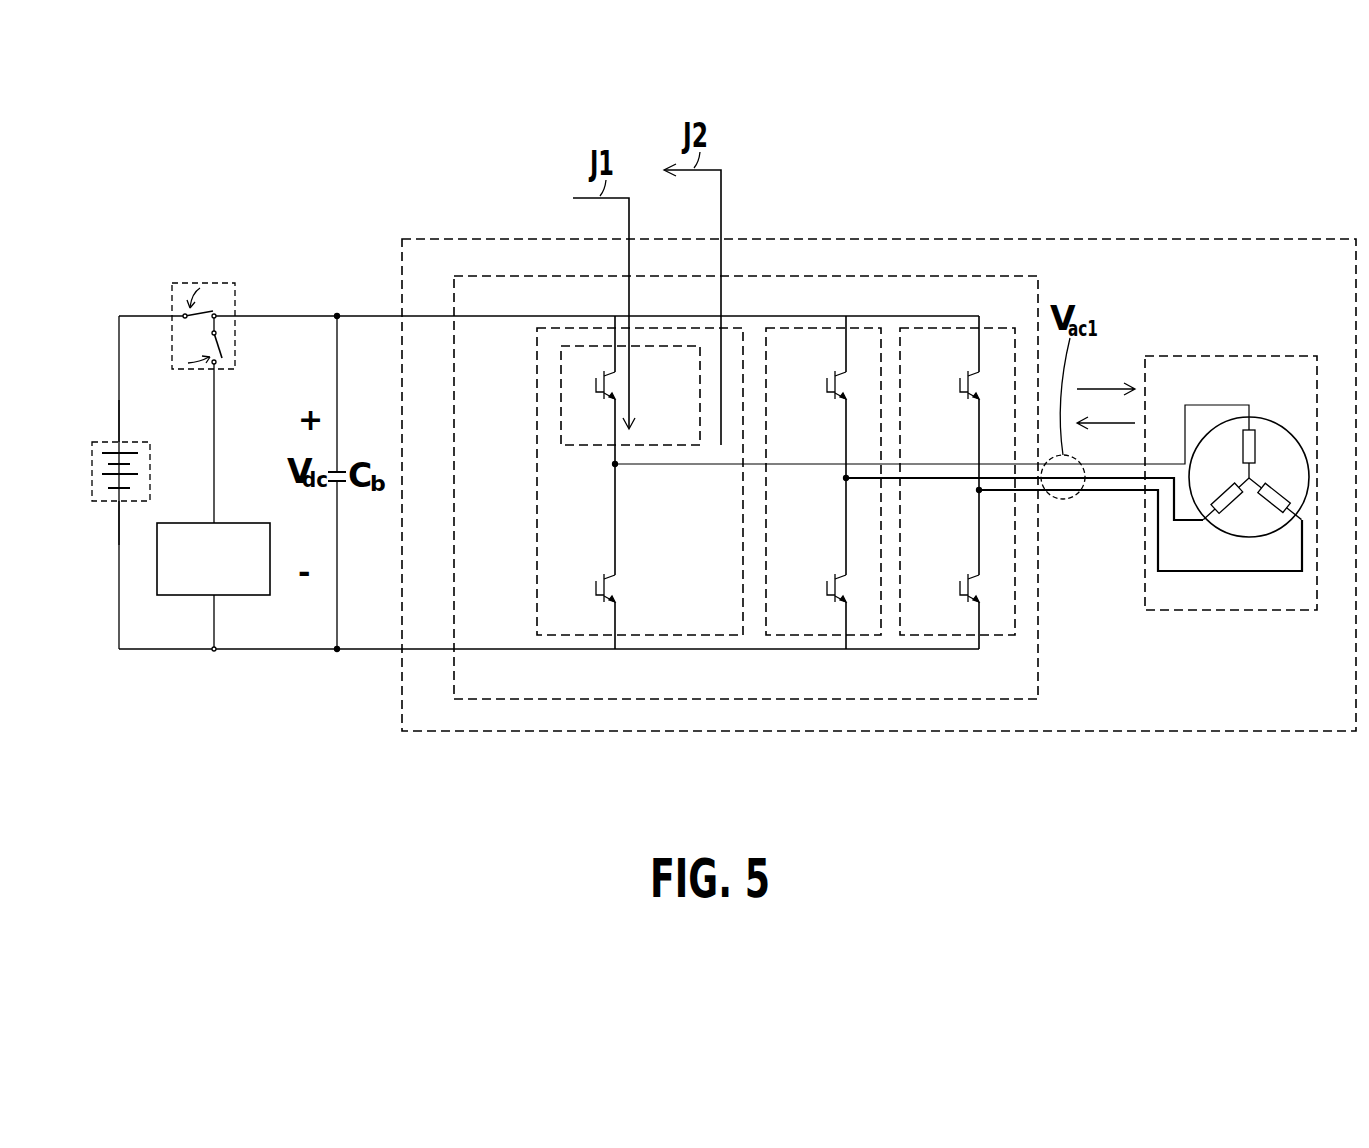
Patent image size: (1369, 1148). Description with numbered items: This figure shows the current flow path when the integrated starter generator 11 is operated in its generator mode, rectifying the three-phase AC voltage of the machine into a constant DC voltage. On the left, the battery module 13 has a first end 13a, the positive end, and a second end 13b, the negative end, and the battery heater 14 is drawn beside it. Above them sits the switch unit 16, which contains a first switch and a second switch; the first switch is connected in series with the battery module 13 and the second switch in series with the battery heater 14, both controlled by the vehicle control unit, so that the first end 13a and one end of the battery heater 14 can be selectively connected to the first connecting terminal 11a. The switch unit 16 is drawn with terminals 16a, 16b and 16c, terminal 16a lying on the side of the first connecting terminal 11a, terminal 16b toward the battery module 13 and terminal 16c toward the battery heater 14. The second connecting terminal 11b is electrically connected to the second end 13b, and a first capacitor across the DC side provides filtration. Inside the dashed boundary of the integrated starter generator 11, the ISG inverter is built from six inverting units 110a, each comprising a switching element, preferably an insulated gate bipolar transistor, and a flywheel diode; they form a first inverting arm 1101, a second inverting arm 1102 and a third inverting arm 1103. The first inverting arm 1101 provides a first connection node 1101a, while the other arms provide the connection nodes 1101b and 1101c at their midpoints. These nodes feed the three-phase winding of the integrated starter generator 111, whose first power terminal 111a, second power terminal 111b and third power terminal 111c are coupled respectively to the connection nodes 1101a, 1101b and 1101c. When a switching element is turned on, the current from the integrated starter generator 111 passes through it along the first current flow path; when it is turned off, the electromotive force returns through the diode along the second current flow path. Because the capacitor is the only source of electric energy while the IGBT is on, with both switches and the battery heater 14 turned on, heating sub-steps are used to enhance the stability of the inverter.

The integrated starter generator (ISG) 11 is at (1190, 238).
The first connecting terminal 11a is at (402, 314).
The second connecting terminal 11b is at (402, 652).
The inverting unit 110a is at (561, 369).
The first inverting arm 1101 is at (607, 508).
The second inverting arm 1102 is at (823, 636).
The third inverting arm 1103 is at (958, 636).
The first connection node 1101a is at (612, 464).
The second phase output line 1101b is at (845, 478).
The third phase output line 1101c is at (978, 498).
The integrated starter generator 111 is at (1231, 454).
The first power terminal 111a is at (1278, 397).
The second power terminal 111b is at (1207, 523).
The third power terminal 111c is at (1297, 523).
The battery module 13 is at (92, 470).
The first end 13a is at (119, 440).
The second end 13b is at (119, 503).
The battery heater 14 is at (240, 595).
The switch unit 16 is at (203, 349).
The first switch terminal 16a is at (237, 314).
The second switch terminal 16b is at (172, 315).
The third switch terminal 16c is at (213, 370).